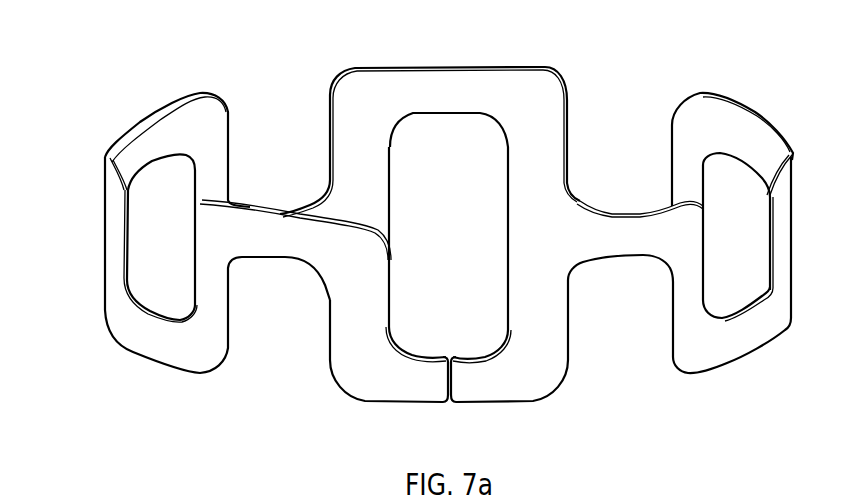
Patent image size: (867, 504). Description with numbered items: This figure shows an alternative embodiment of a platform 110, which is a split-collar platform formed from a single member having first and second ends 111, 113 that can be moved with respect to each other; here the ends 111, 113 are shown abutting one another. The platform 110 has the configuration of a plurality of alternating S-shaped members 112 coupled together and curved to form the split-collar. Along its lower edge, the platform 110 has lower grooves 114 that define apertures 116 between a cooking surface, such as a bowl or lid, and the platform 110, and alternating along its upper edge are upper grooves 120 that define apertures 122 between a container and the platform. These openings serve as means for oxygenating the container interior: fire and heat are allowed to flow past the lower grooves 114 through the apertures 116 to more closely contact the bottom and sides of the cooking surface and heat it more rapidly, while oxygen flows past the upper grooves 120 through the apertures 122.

The platform 110 is at (136, 93).
The first end 111 is at (430, 377).
The S-shaped members 112 is at (337, 67).
The second end 113 is at (480, 377).
The lower grooves 114 is at (293, 208).
The apertures 116 is at (265, 130).
The upper grooves 120 is at (615, 260).
The apertures 122 is at (632, 343).